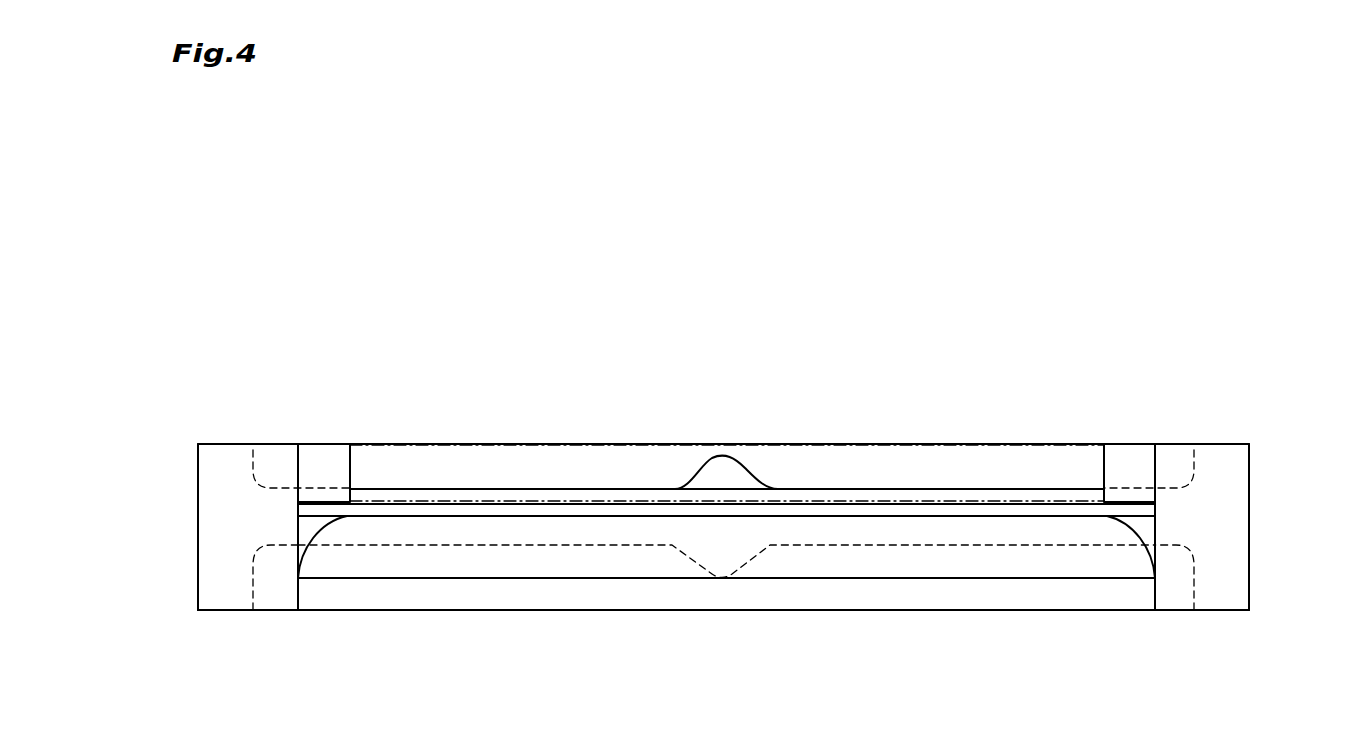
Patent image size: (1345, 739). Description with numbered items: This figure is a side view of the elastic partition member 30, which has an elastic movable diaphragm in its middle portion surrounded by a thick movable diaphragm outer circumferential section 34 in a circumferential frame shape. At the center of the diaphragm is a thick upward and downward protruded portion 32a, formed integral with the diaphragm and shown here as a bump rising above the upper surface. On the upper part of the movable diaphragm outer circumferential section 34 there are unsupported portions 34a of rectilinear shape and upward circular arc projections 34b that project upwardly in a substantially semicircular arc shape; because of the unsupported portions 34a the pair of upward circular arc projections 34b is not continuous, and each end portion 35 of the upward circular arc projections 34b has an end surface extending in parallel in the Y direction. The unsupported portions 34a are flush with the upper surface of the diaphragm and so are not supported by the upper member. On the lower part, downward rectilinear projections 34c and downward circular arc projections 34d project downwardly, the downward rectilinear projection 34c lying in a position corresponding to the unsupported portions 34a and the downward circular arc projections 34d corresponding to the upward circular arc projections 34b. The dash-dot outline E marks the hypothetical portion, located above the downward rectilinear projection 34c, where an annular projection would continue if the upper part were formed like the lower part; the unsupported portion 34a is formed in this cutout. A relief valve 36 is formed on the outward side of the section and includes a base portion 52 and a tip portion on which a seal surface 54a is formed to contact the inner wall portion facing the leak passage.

The elastic partition member 30 is at (284, 406).
The movable diaphragm outer circumferential section 34 is at (1234, 532).
The unsupported portion 34a is at (920, 489).
The upward circular arc projection 34b is at (228, 472).
The downward rectilinear projection 34c is at (485, 600).
The downward circular arc projection 34d is at (238, 598).
The end portion 35 is at (336, 466).
The upward and downward protruded portion 32a is at (748, 464).
The relief valve 36 is at (601, 565).
The base portion 52 is at (834, 580).
The seal surface 54a is at (877, 512).
The hypothetical portion E is at (540, 456).